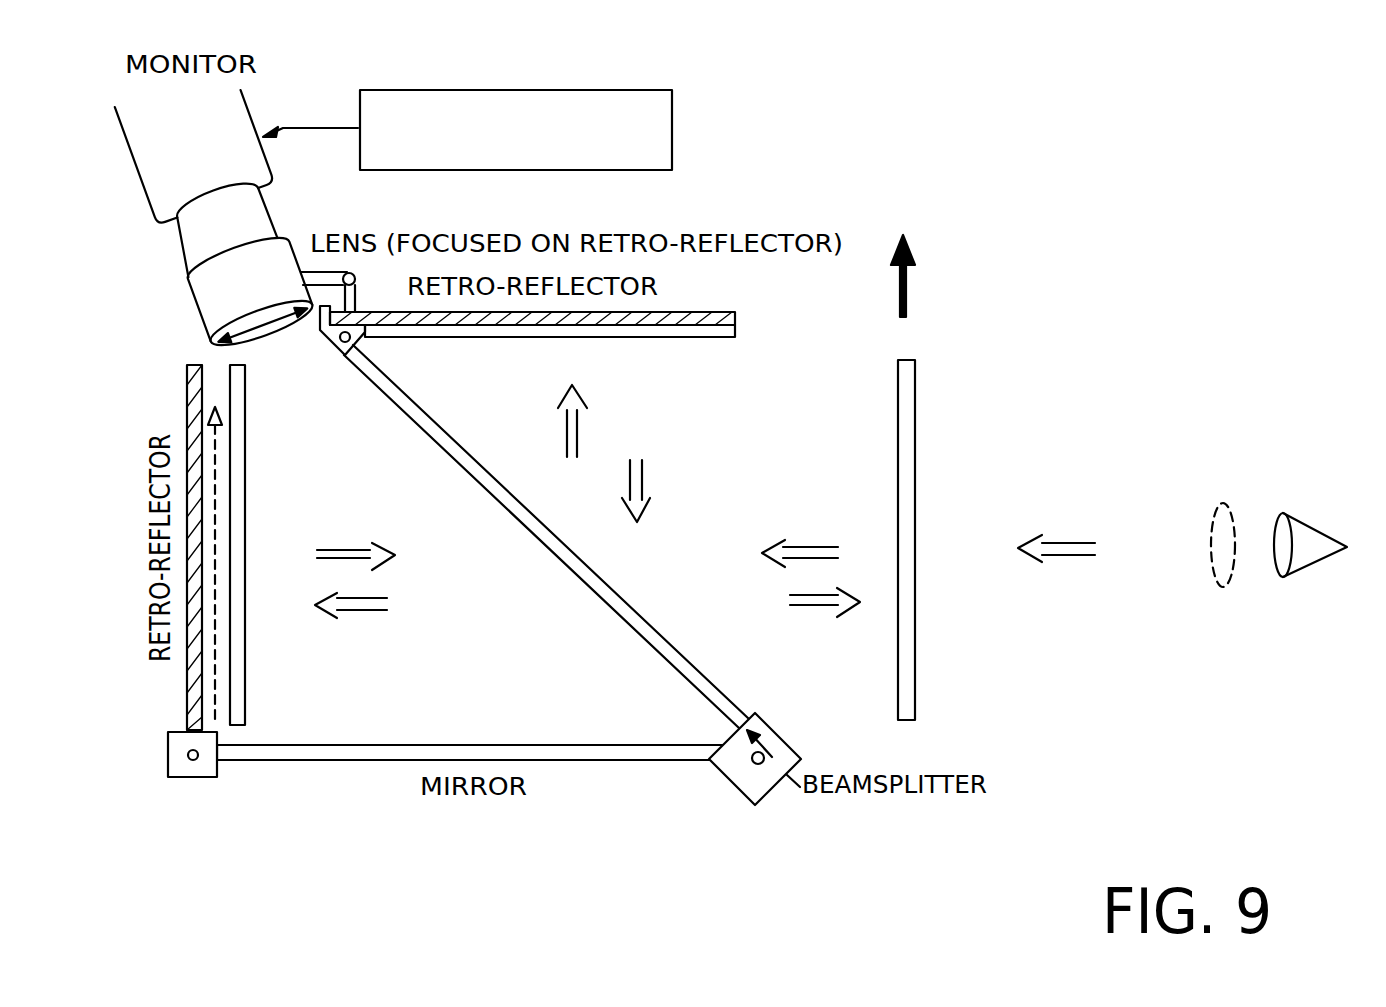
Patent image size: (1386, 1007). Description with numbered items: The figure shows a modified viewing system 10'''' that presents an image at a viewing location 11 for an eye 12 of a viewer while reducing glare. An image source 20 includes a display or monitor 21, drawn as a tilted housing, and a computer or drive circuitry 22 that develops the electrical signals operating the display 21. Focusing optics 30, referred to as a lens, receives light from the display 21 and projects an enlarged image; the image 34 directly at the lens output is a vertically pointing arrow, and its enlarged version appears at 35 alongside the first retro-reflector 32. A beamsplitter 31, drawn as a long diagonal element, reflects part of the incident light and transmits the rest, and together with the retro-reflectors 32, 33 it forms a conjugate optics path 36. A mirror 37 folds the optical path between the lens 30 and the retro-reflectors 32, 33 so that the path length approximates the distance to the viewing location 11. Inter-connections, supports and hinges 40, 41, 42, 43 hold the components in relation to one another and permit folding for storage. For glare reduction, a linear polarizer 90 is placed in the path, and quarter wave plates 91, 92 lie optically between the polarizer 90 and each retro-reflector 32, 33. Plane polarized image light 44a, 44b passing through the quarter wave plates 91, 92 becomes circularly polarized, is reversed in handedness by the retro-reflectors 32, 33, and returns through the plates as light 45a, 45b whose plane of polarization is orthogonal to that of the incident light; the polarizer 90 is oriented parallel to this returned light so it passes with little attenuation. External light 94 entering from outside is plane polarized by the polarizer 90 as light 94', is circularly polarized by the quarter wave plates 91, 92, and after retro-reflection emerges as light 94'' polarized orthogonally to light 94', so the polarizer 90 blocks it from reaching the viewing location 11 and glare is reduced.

The modified viewing system 10'''' is at (845, 238).
The viewing location 11 is at (1210, 510).
The eye 12 is at (1300, 522).
The image source 20 is at (275, 154).
The display 21 is at (272, 170).
The computer or drive circuitry 22 is at (672, 127).
The focusing optics 30 is at (258, 348).
The beamsplitter 31 is at (618, 594).
The retro-reflector 32 is at (195, 698).
The retro-reflector 33 is at (618, 325).
The image 34 is at (275, 325).
The enlarged image 35 is at (213, 548).
The conjugate optics path 36 is at (758, 690).
The mirror 37 is at (413, 745).
The interconnection support 40 is at (197, 777).
The interconnection support 41 is at (740, 787).
The interconnection support 42 is at (337, 353).
The interconnection support 43 is at (358, 300).
The light 44a is at (358, 612).
The light 44b is at (565, 440).
The light 45a is at (327, 515).
The light 45b is at (703, 460).
The linear polarizer 90 is at (915, 400).
The quarter wave plate 91 is at (245, 707).
The quarter wave plate 92 is at (692, 338).
The external light 94 is at (1059, 578).
The plane polarized light 94' is at (803, 521).
The plane polarized light 94'' is at (825, 625).